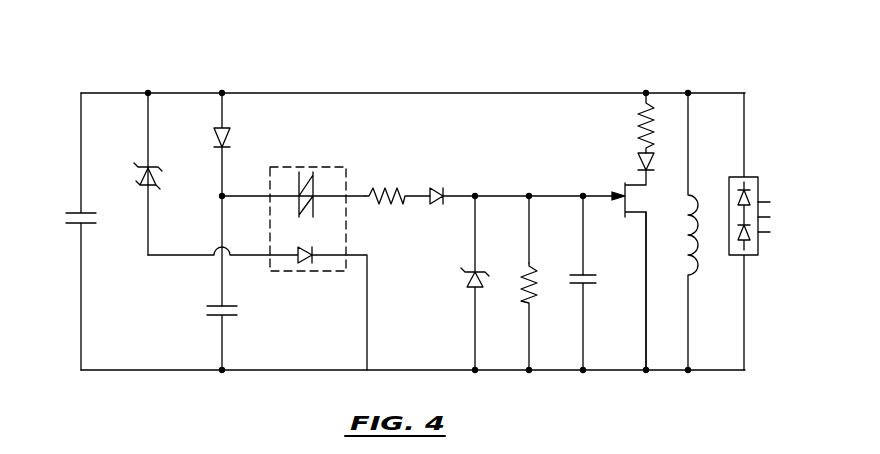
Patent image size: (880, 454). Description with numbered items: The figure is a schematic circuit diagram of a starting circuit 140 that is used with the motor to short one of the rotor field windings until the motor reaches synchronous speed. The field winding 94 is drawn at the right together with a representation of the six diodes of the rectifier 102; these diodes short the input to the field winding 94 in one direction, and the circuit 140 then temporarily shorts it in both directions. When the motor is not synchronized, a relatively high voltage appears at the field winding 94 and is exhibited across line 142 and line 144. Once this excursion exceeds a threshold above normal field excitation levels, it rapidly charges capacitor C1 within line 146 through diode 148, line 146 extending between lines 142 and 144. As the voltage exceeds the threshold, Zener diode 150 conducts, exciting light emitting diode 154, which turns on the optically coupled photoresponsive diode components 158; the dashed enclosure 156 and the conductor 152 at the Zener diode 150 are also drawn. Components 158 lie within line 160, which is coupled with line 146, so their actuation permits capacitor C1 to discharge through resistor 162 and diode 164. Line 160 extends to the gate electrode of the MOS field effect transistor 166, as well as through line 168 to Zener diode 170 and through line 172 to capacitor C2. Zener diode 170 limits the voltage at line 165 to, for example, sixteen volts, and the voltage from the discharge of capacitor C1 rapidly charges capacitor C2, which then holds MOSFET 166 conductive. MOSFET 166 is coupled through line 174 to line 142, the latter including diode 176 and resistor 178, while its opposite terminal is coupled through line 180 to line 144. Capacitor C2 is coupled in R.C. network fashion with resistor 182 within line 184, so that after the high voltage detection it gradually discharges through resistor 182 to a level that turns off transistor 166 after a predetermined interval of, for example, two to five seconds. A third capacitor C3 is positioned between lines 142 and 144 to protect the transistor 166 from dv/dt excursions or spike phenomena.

The starting circuit 140 is at (305, 66).
The line 142 is at (455, 93).
The line 144 is at (400, 370).
The line 146 is at (222, 283).
The diode 148 is at (228, 128).
The Zener diode 150 is at (152, 167).
The conductor 152 is at (148, 200).
The light emitting diode 154 is at (303, 264).
The optocoupler package 156 is at (346, 167).
The optically coupled photoresponsive diode components 158 is at (302, 178).
The line 160 is at (242, 194).
The resistor 162 is at (385, 195).
The diode 164 is at (440, 193).
The line 165 is at (505, 196).
The MOS field effect transistor 166 is at (626, 185).
The line 168 is at (475, 244).
The Zener diode 170 is at (470, 281).
The line 172 is at (583, 248).
The line 174 is at (651, 270).
The diode 176 is at (640, 153).
The resistor 178 is at (640, 122).
The line 180 is at (646, 316).
The resistor 182 is at (529, 296).
The line 184 is at (529, 226).
The field winding 94 is at (708, 198).
The rectifier 102 is at (752, 177).
The capacitor C1 is at (232, 318).
The capacitor C2 is at (590, 275).
The capacitor C3 is at (90, 226).